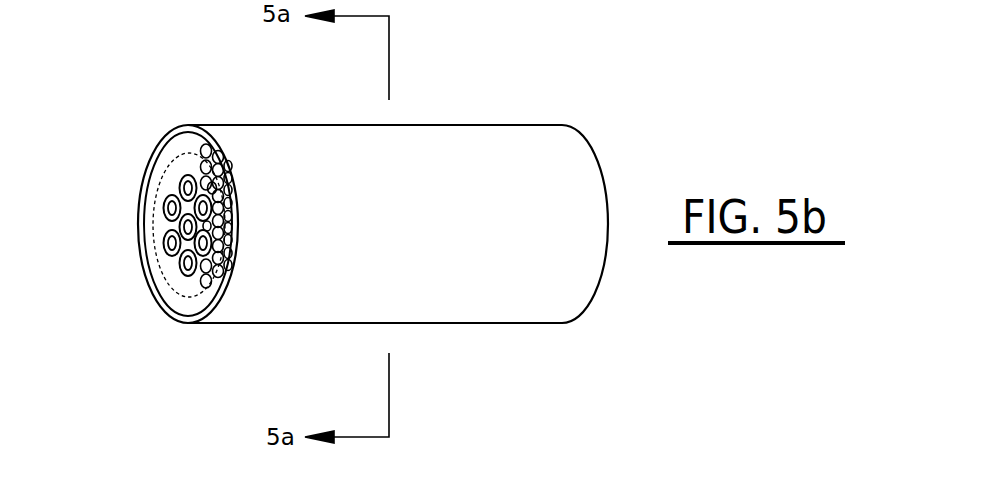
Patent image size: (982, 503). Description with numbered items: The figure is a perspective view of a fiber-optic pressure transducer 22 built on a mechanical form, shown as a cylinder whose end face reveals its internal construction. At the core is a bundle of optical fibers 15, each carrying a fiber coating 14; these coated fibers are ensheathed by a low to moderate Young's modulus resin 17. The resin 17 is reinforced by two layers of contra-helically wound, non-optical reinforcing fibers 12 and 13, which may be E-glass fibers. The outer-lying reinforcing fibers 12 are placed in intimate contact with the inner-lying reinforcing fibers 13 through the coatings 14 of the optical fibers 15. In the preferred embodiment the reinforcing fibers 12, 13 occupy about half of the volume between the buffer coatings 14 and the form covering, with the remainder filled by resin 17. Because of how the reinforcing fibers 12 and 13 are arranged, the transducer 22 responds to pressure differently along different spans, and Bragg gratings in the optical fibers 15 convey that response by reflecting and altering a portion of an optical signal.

The outer-lying reinforcing fibers 12 is at (222, 151).
The inner-lying reinforcing fibers 13 is at (208, 187).
The fiber coating 14 is at (170, 199).
The optical fibers 15 is at (170, 211).
The resin 17 is at (168, 298).
The pressure transducer 22 is at (563, 78).